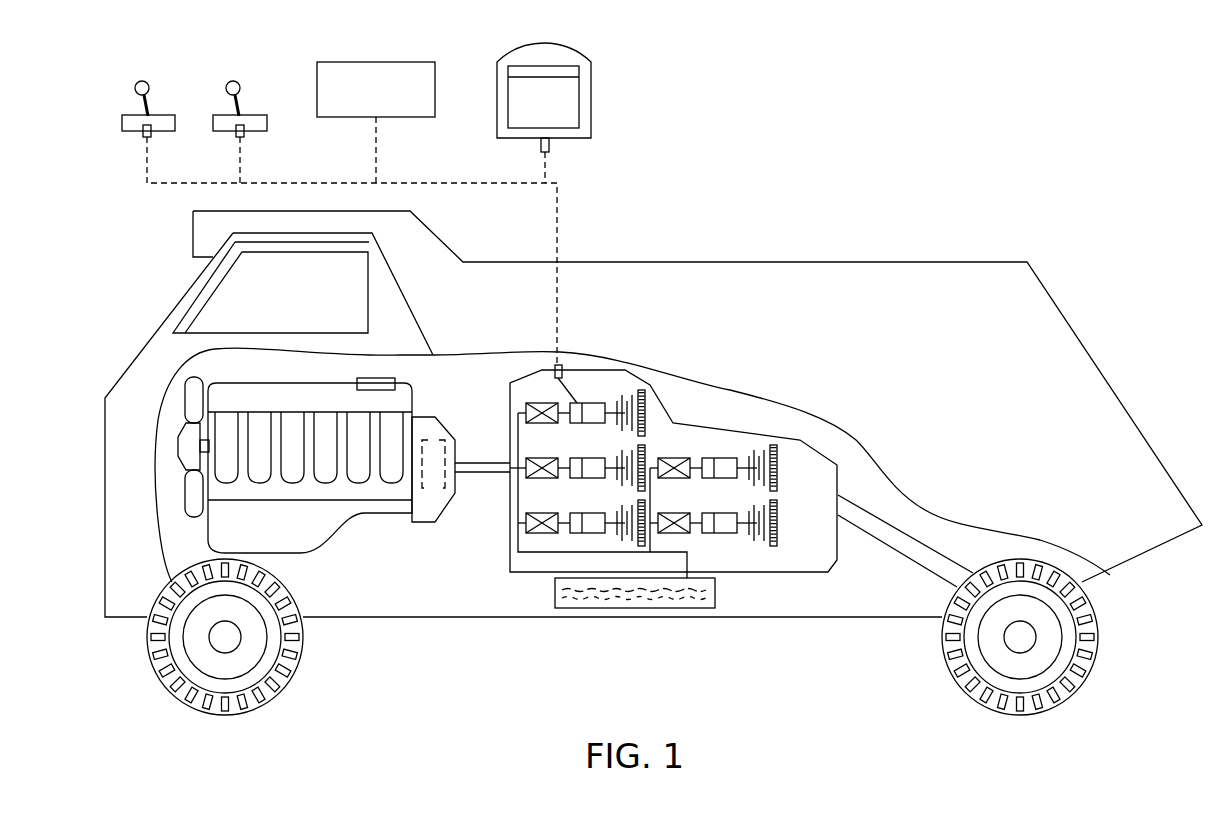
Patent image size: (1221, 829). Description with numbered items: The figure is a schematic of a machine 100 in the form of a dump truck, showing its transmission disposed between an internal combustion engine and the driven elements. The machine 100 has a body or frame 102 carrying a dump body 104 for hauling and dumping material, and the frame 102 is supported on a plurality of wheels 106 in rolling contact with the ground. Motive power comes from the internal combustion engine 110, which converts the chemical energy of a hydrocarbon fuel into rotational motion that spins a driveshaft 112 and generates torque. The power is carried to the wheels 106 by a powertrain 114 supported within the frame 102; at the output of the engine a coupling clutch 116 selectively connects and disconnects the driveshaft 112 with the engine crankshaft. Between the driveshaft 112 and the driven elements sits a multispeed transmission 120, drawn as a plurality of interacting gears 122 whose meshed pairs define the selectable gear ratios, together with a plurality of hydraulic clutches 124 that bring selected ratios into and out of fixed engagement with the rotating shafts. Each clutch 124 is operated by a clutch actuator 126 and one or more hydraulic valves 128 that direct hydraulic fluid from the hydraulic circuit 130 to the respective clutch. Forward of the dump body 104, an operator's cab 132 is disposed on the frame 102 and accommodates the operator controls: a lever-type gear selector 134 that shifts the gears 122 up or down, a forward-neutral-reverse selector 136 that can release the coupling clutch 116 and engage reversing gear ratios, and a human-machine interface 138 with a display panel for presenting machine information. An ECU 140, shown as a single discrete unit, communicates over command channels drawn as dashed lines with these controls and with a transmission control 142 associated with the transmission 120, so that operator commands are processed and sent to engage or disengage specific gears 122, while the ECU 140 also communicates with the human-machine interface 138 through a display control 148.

The machine 100 is at (772, 178).
The frame 102 is at (398, 617).
The dump body 104 is at (740, 300).
The wheels 106 is at (215, 683).
The internal combustion engine 110 is at (240, 400).
The driveshaft 112 is at (482, 460).
The powertrain 114 is at (403, 545).
The coupling clutch 116 is at (423, 440).
The transmission 120 is at (658, 427).
The gears 122 is at (641, 390).
The clutches 124 is at (620, 393).
The clutch actuator 126 is at (577, 403).
The hydraulic valves 128 is at (527, 530).
The hydraulic circuit 130 is at (630, 610).
The operator's cab 132 is at (245, 282).
The gear selector 134 is at (256, 114).
The forward-neutral-reverse selector 136 is at (164, 114).
The human-machine interface 138 is at (546, 54).
The ECU 140 is at (388, 62).
The transmission control 142 is at (556, 365).
The display control 148 is at (552, 143).